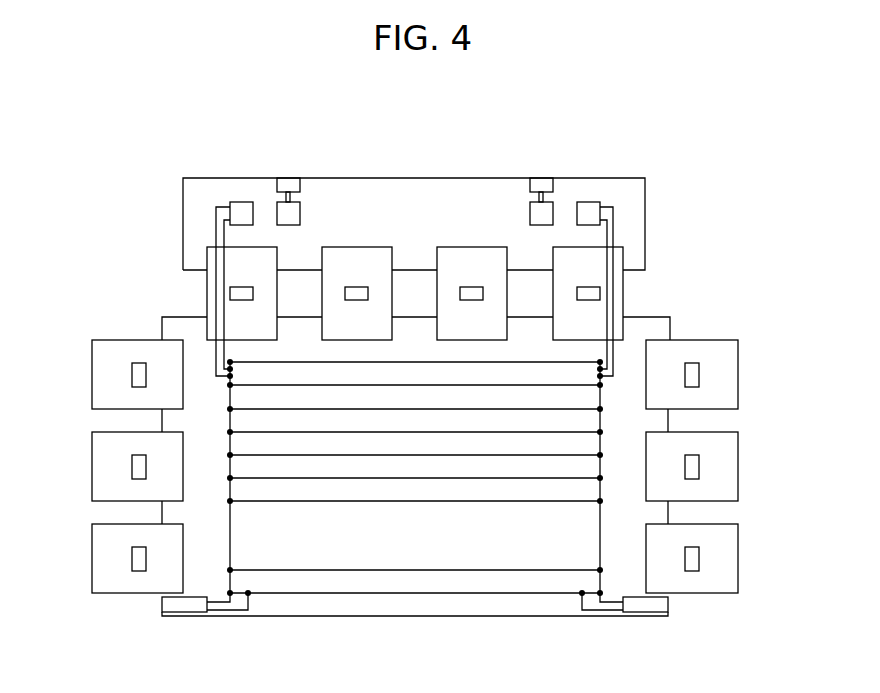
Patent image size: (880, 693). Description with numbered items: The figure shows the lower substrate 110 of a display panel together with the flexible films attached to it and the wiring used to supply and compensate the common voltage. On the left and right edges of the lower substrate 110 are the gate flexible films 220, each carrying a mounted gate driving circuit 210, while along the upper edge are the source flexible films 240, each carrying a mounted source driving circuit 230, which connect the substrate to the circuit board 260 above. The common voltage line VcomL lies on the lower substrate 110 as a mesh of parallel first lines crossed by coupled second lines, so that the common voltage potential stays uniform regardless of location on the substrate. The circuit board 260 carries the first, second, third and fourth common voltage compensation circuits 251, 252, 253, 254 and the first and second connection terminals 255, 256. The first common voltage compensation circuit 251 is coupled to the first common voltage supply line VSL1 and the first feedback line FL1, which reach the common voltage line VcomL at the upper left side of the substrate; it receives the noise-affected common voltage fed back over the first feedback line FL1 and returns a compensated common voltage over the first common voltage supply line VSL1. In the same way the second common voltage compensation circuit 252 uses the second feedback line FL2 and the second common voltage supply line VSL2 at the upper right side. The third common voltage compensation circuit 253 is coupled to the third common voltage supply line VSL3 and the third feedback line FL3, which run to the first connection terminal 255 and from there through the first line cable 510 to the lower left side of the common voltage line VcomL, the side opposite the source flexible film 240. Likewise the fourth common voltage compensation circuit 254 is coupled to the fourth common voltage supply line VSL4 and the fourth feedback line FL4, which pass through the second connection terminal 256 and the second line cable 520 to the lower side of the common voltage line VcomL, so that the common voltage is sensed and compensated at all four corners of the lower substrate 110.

The lower substrate 110 is at (505, 616).
The gate driving circuit 210 is at (132, 372).
The gate flexible film 220 is at (118, 392).
The source driving circuit 230 is at (600, 293).
The source flexible film 240 is at (623, 307).
The first common voltage compensation circuit 251 is at (237, 202).
The second common voltage compensation circuit 252 is at (595, 202).
The third common voltage compensation circuit 253 is at (300, 213).
The fourth common voltage compensation circuit 254 is at (530, 213).
The first connection terminal 255 is at (289, 185).
The second connection terminal 256 is at (541, 185).
The circuit board 260 is at (418, 200).
The first line cable 510 is at (180, 605).
The second line cable 520 is at (645, 605).
The first feedback line FL1 is at (215, 213).
The second feedback line FL2 is at (613, 213).
The third feedback line FL3 is at (300, 197).
The fourth feedback line FL4 is at (553, 197).
The first common voltage supply line VSL1 is at (222, 238).
The second common voltage supply line VSL2 is at (607, 238).
The third common voltage supply line VSL3 is at (277, 197).
The fourth common voltage supply line VSL4 is at (530, 197).
The common voltage line VcomL is at (380, 593).